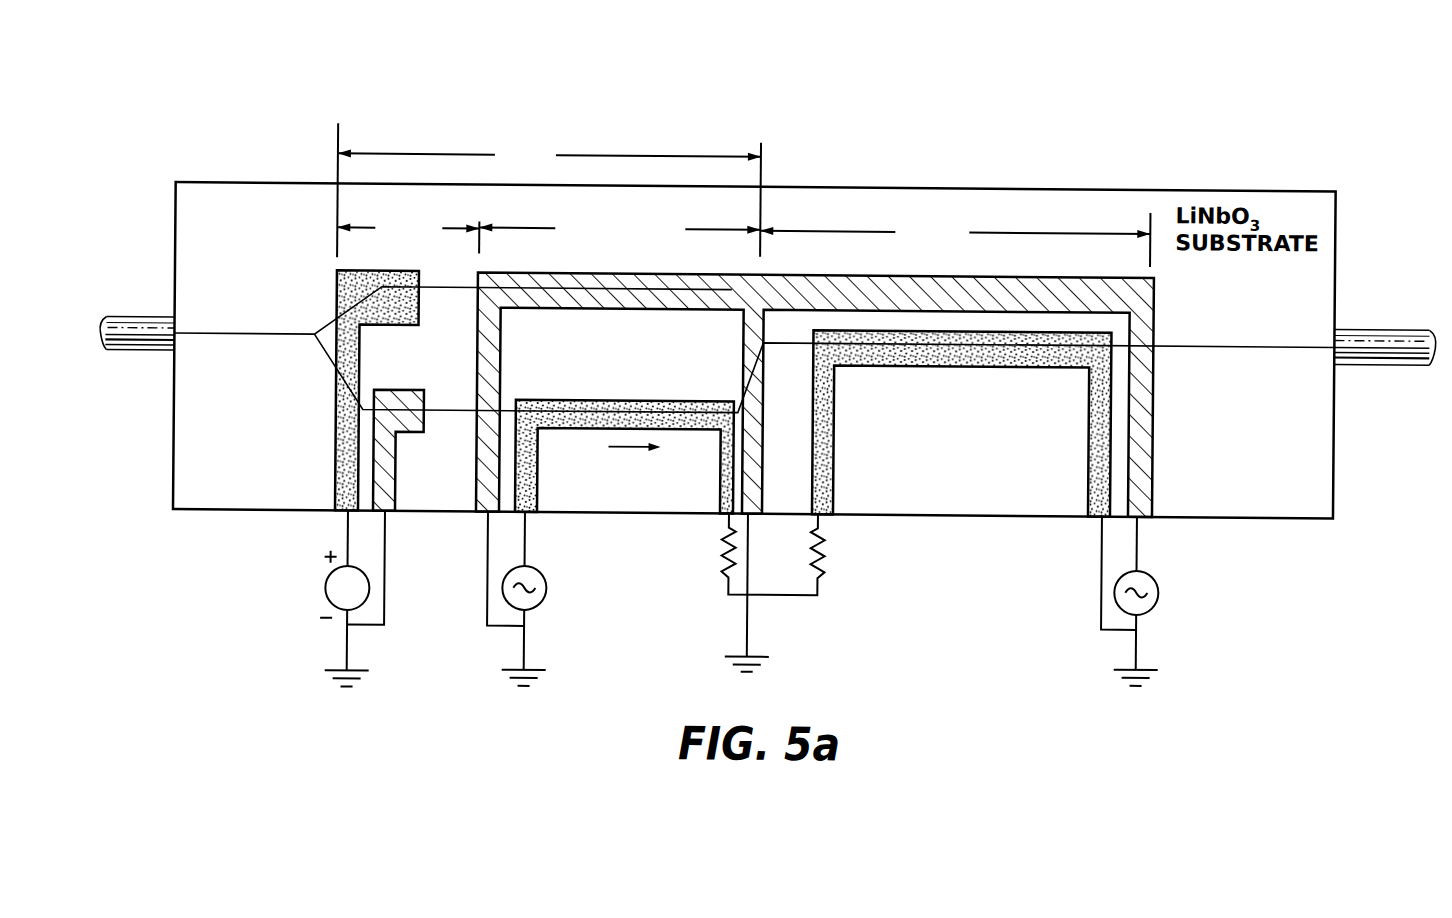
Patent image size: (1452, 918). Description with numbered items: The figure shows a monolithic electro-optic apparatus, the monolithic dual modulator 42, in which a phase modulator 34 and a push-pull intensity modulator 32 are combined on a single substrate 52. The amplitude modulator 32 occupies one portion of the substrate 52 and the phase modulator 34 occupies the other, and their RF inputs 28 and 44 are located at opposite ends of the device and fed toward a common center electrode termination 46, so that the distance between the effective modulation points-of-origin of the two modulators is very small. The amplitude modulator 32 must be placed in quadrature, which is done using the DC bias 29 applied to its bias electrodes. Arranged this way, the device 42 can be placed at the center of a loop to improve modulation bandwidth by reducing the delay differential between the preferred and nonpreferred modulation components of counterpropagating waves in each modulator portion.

The monolithic dual modulator 42 is at (1160, 120).
The substrate 52 is at (1298, 509).
The push-pull intensity modulator 32 is at (641, 151).
The phase modulator 34 is at (1006, 225).
The DC bias 29 is at (328, 571).
The RF input 28 is at (525, 640).
The common center electrode termination 46 is at (748, 618).
The RF input 44 is at (1137, 629).